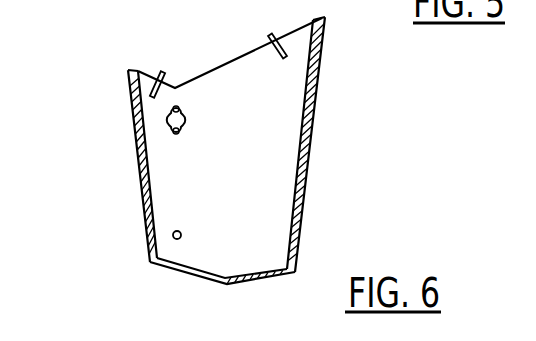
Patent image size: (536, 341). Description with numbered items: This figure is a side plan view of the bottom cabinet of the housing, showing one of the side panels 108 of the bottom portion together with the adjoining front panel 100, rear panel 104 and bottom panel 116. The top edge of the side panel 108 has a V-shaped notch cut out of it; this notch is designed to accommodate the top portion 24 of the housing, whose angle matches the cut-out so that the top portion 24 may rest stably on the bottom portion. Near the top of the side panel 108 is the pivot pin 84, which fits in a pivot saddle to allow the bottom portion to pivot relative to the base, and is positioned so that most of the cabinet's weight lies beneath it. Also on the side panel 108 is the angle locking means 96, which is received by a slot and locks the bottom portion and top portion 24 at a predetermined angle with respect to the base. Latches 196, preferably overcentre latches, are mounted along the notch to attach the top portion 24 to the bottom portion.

The top portion 24 is at (370, 129).
The pivot pin 84 is at (169, 119).
The angle locking means 96 is at (173, 238).
The front panel 100 is at (141, 178).
The rear panel 104 is at (299, 210).
The side panel 108 is at (246, 198).
The bottom panel 116 is at (257, 284).
The latches 196 is at (157, 72).